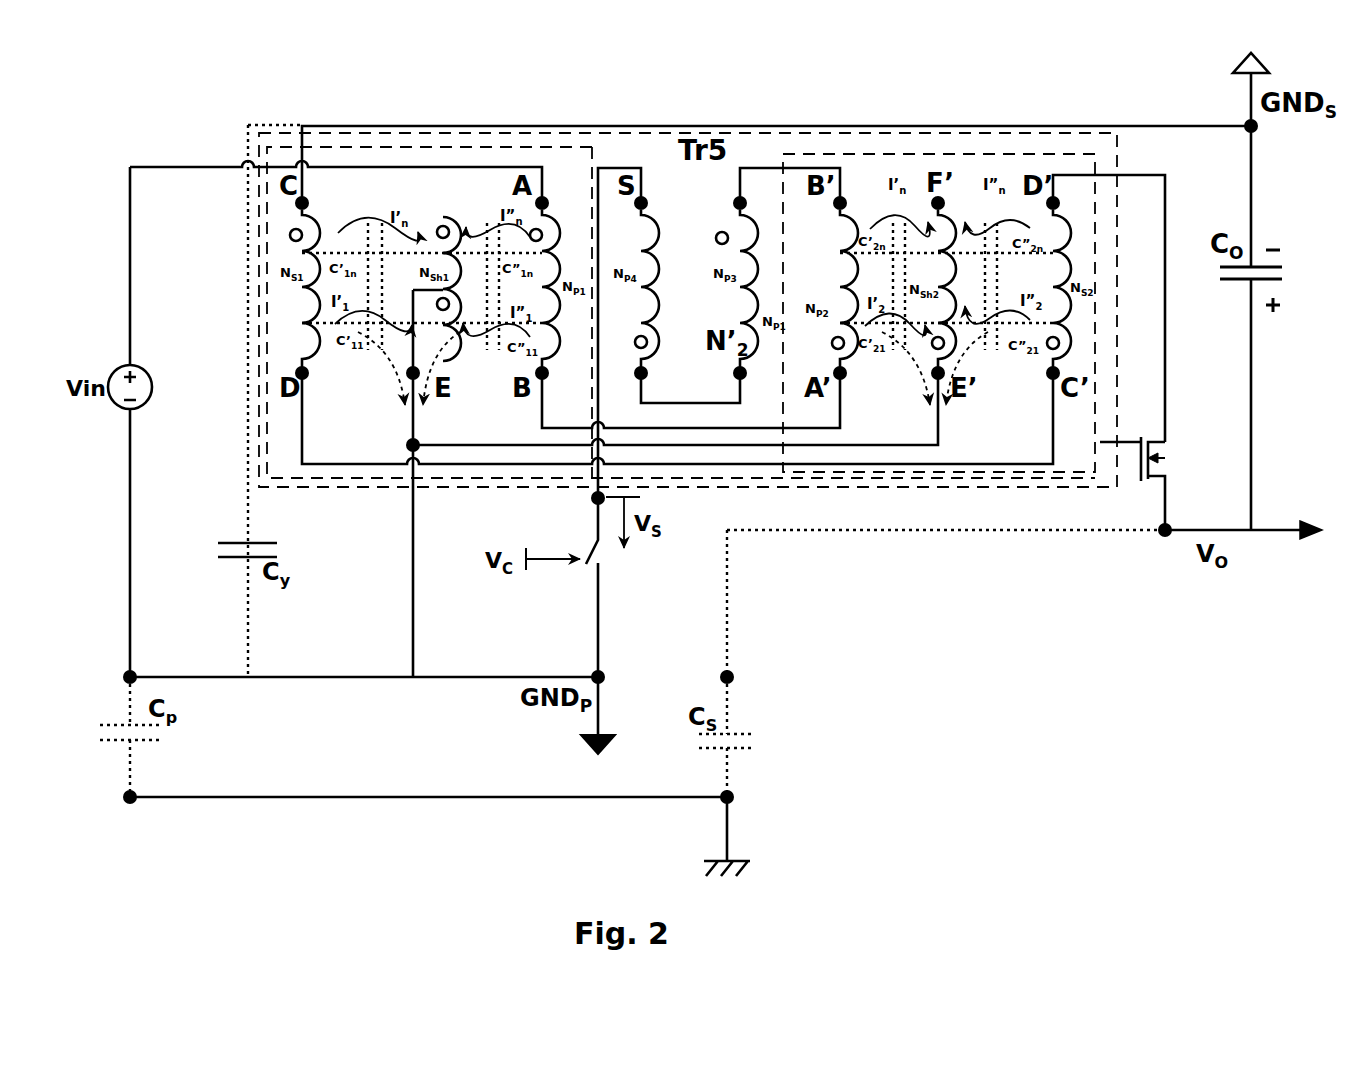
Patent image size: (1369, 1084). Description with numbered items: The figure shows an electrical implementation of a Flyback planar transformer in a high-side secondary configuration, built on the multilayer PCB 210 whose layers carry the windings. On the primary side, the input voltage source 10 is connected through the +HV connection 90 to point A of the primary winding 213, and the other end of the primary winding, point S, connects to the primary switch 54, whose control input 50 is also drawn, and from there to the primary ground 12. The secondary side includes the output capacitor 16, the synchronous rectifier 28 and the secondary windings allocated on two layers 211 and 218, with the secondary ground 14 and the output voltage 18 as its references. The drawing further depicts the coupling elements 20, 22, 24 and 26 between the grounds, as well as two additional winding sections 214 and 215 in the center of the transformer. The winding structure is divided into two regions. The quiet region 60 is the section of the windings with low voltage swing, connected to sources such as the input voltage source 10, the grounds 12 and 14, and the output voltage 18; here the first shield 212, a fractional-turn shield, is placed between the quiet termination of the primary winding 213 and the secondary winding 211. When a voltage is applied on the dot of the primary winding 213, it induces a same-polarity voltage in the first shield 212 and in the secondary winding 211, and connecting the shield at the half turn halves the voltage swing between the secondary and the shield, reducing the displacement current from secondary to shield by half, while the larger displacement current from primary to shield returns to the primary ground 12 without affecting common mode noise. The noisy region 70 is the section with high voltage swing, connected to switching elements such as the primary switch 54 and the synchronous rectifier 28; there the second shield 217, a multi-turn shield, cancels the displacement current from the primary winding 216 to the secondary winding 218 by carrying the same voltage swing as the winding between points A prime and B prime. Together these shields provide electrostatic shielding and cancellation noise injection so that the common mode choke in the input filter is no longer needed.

The input voltage source 10 is at (92, 357).
The primary ground GNDp 12 is at (612, 682).
The secondary ground GNDs 14 is at (1280, 125).
The output capacitor 16 is at (1283, 255).
The output voltage Vo 18 is at (1242, 546).
The secondary stray capacitance Cs 20 is at (752, 722).
The primary stray capacitance Cp 22 is at (172, 733).
The earth ground 24 is at (752, 868).
The Y-capacitor Cy 26 is at (293, 583).
The synchronous rectifier 28 is at (1160, 456).
The switch control signal Vc 50 is at (551, 569).
The primary switch 54 is at (591, 579).
The quiet region 60 is at (291, 446).
The noisy region 70 is at (1095, 238).
The +HV connection 90 is at (205, 203).
The multilayer PCB 210 is at (1040, 489).
The secondary winding 211 is at (318, 213).
The first shield 212 is at (457, 213).
The primary winding 213 is at (555, 213).
The primary winding Np4 214 is at (655, 213).
The primary winding Np3 215 is at (753, 213).
The primary winding 216 is at (852, 213).
The second shield 217 is at (950, 213).
The secondary winding 218 is at (1067, 212).